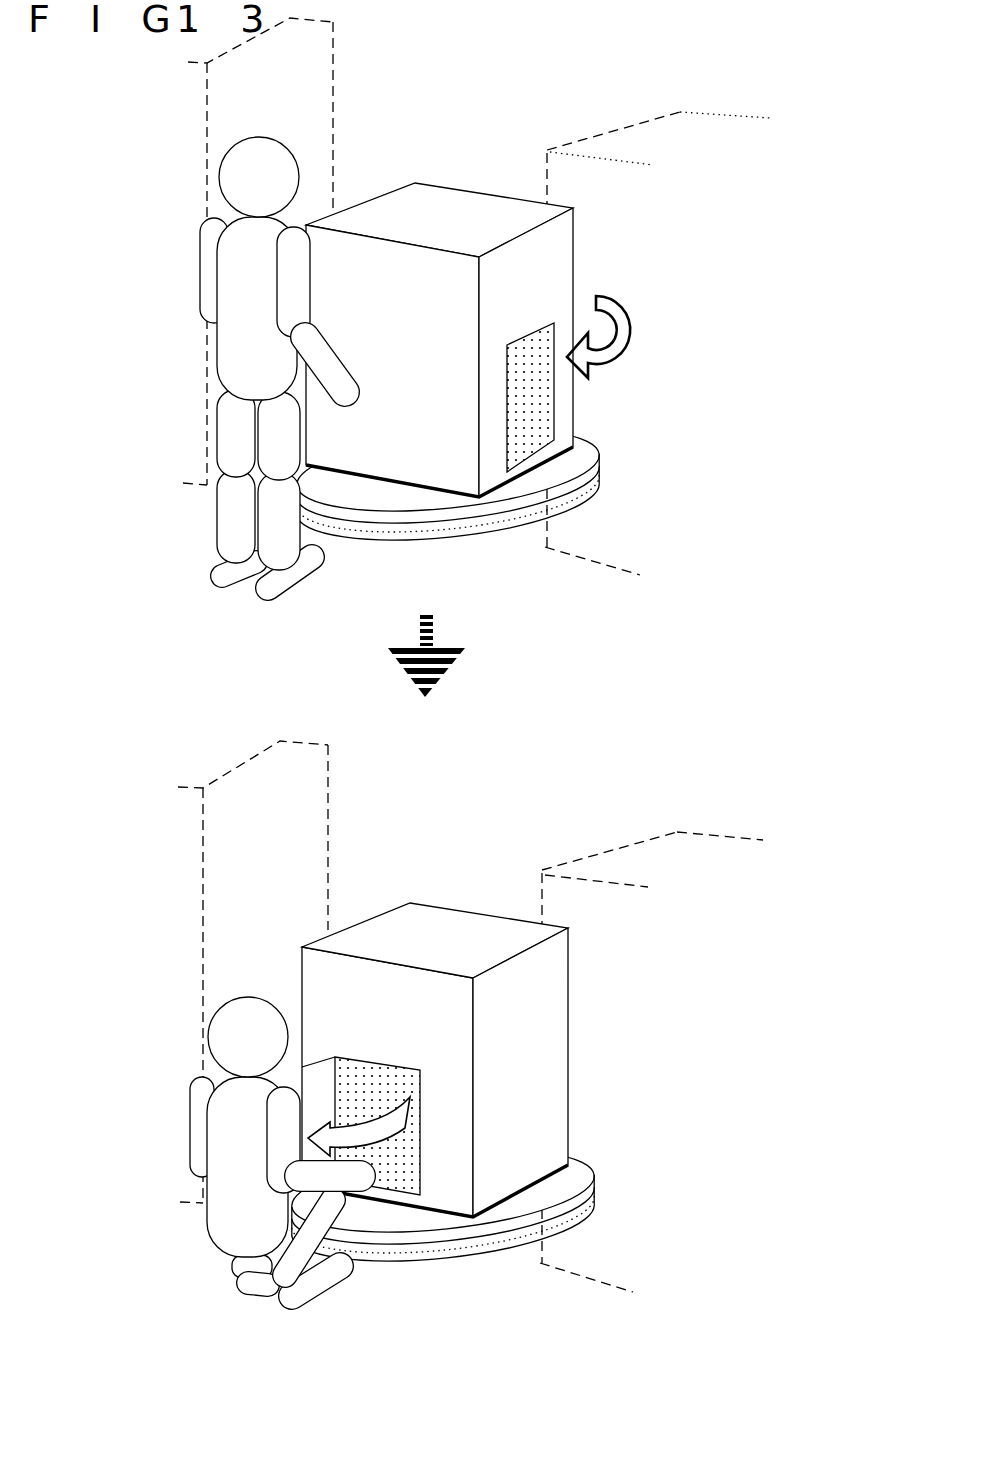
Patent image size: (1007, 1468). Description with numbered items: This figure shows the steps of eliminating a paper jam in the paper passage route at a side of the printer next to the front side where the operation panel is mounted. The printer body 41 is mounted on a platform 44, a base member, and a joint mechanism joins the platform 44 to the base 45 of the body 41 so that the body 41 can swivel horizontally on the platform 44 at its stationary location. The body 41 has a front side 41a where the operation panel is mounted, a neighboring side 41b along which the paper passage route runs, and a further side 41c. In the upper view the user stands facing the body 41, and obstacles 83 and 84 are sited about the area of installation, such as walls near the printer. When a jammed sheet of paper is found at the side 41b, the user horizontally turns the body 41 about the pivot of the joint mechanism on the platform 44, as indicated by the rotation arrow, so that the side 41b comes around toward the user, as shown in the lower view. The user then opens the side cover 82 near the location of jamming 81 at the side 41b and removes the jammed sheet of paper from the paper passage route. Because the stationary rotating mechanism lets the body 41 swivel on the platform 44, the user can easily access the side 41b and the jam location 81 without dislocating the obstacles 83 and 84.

The body 41 is at (437, 655).
The front side 41a is at (375, 265).
The side 41b is at (524, 247).
The side face C of the box 41c is at (523, 967).
The platform 44 is at (413, 527).
The base 45 is at (407, 498).
The location of jamming 81 is at (527, 413).
The side cover 82 is at (554, 398).
The obstacle 83 is at (313, 80).
The obstacle 84 is at (663, 128).